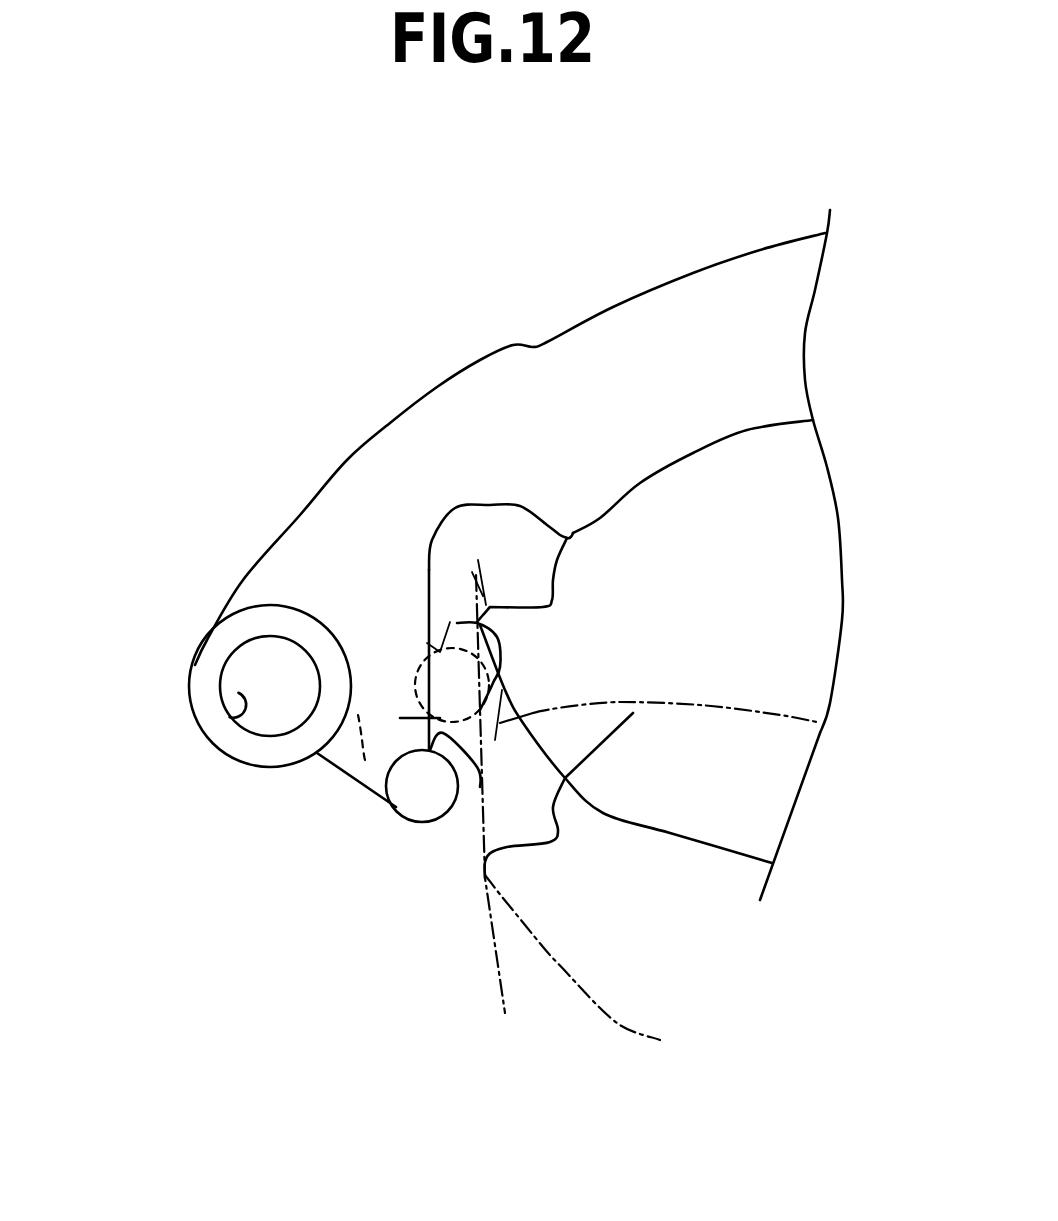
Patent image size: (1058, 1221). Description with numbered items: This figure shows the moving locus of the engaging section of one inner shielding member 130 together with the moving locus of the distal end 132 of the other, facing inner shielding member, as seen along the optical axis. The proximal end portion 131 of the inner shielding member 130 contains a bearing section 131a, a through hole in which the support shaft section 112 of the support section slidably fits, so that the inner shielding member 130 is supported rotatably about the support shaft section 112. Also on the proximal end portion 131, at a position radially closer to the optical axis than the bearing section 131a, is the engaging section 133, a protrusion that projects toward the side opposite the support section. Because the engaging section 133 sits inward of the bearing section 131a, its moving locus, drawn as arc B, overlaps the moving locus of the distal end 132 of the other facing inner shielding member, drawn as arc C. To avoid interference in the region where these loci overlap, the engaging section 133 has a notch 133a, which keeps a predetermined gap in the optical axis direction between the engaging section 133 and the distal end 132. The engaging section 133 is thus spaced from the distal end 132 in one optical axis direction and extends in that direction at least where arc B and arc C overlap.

The inner shielding member 130 is at (345, 463).
The support shaft section 112 is at (225, 665).
The proximal end portion 131 is at (287, 767).
The bearing section 131a is at (240, 723).
The distal end 132 is at (505, 605).
The engaging section 133 is at (405, 822).
The notch 133a is at (430, 645).
The arc B is at (837, 720).
The arc C is at (498, 975).